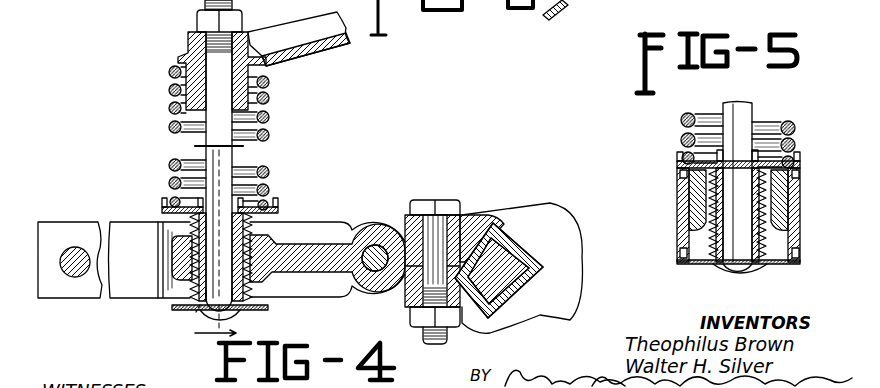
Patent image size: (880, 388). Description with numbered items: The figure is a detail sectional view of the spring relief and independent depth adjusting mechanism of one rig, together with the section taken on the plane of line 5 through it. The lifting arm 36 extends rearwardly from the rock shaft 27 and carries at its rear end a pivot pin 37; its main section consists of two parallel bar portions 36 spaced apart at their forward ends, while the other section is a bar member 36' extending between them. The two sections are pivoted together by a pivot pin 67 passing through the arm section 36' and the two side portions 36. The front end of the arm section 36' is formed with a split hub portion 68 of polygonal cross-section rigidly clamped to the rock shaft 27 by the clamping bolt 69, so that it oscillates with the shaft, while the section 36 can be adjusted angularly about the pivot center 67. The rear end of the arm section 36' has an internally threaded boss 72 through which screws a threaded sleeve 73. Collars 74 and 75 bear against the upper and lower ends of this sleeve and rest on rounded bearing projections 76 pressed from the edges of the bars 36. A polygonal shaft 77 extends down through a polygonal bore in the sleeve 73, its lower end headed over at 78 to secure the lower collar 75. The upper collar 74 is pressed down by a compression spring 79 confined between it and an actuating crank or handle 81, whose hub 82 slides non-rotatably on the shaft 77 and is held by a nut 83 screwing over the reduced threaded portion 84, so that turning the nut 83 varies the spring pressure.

In FIG. 4, the nut 83 is at (204, 21).
In FIG. 4, the reduced threaded portion 84 is at (207, 40).
In FIG. 4, the hub 82 is at (180, 60).
In FIG. 4, the actuating crank or handle 81 is at (323, 52).
In FIG. 4, the compression spring 79 is at (270, 118).
In FIG. 5, the compression spring 79 is at (786, 124).
In FIG. 4, the polygonal shaft 77 is at (222, 160).
In FIG. 5, the polygonal shaft 77 is at (742, 112).
In FIG. 4, the section line 5- 5 is at (209, 241).
In FIG. 4, the lifting arm 36 is at (150, 243).
In FIG. 5, the lifting arm 36 is at (736, 200).
In FIG. 4, the upper collar 74 is at (272, 204).
In FIG. 5, the upper collar 74 is at (798, 156).
In FIG. 4, the bar member 36' is at (327, 236).
In FIG. 4, the threaded sleeve 73 is at (250, 233).
In FIG. 5, the threaded sleeve 73 is at (764, 258).
In FIG. 4, the pivot pin 67 is at (373, 252).
In FIG. 4, the clamping bolt 69 is at (450, 183).
In FIG. 4, the rock shaft 27 is at (492, 213).
In FIG. 4, the split hub portion 68 is at (489, 252).
In FIG. 4, the pivot pin 37 is at (80, 268).
In FIG. 4, the internally threaded boss 72 is at (182, 272).
In FIG. 5, the internally threaded boss 72 is at (698, 232).
In FIG. 4, the bearing projections 76 is at (205, 315).
In FIG. 5, the bearing projections 76 is at (680, 171).
In FIG. 4, the shoulder or headed-over end 78 is at (242, 316).
In FIG. 5, the shoulder or headed-over end 78 is at (744, 272).
In FIG. 4, the lower collar 75 is at (270, 308).
In FIG. 5, the lower collar 75 is at (798, 265).